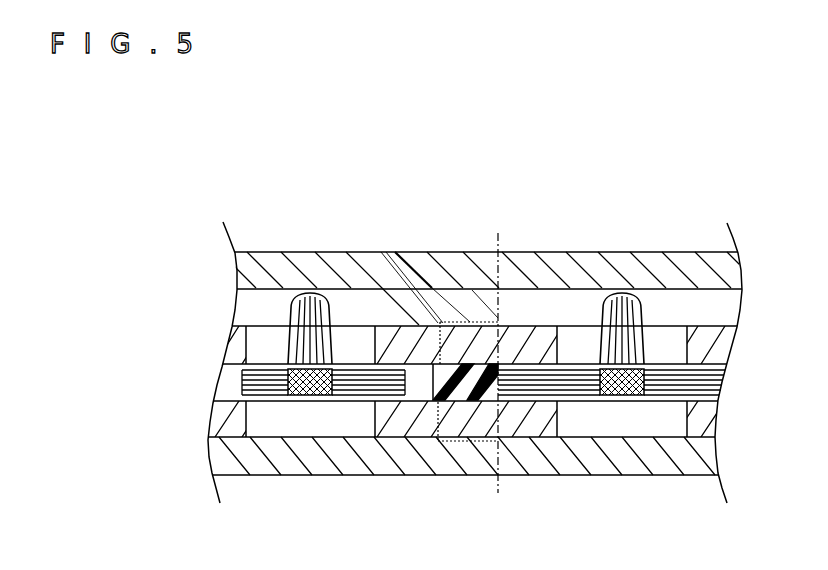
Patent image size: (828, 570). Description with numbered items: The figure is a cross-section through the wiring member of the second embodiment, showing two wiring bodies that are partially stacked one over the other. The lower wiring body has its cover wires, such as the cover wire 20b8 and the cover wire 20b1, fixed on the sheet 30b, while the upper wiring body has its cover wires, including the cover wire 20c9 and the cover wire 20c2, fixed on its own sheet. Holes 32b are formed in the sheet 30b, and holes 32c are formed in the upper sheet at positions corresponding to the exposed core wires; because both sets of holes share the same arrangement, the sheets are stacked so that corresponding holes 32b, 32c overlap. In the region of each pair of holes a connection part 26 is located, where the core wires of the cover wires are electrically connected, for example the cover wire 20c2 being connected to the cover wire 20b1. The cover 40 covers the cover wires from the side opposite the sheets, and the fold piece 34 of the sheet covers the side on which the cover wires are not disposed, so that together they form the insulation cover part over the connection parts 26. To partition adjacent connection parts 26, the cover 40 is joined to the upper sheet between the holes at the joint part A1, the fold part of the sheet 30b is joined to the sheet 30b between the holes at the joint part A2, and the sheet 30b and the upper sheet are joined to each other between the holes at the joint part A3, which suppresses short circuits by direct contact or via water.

The cover 40 is at (383, 252).
The cover wire 20c9 is at (303, 295).
The cover wire 20c2 is at (640, 292).
The hole 32c is at (375, 355).
The hole 32b is at (246, 415).
The sheet 30b is at (388, 418).
The connection part 26 is at (307, 395).
The fold piece 34 is at (340, 463).
The cover wire 20b8 is at (229, 384).
The cover wire 20b1 is at (712, 390).
The joint part A1 is at (472, 322).
The joint part A2 is at (476, 443).
The joint part A3 is at (450, 392).